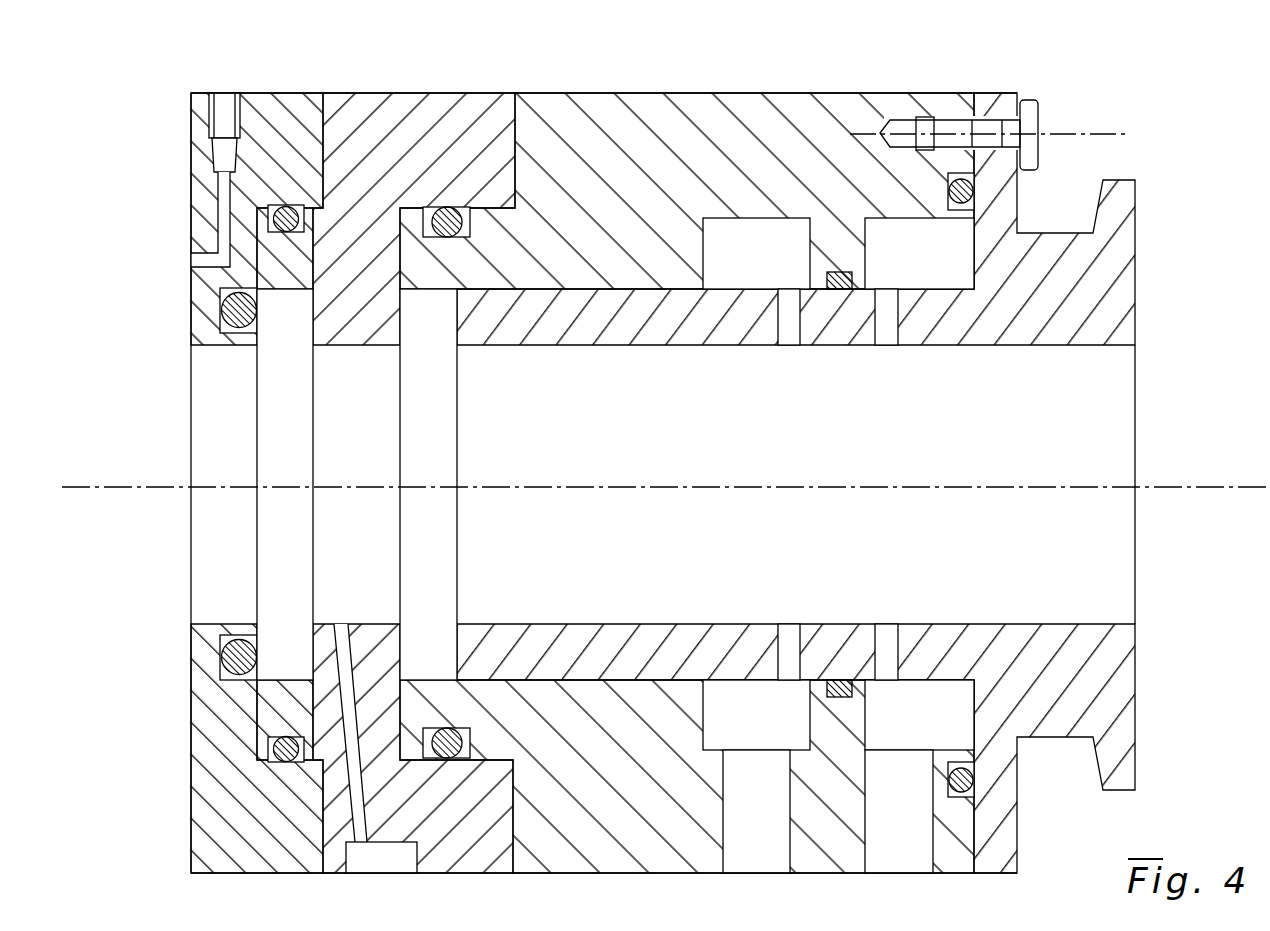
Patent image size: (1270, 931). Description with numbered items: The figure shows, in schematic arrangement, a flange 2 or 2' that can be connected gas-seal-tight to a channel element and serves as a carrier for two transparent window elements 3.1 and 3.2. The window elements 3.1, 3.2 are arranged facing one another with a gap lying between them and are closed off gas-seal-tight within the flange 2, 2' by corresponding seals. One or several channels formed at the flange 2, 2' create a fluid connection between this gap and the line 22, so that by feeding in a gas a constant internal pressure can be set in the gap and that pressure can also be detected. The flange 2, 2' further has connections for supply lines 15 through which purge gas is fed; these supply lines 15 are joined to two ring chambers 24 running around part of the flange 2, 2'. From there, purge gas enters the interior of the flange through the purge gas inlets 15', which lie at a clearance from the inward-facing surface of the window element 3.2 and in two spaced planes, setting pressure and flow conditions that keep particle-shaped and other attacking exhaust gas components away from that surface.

The flange 2 is at (1036, 103).
The flange 2' is at (1121, 103).
The transparent window element 3.1 is at (285, 484).
The transparent window element 3.2 is at (396, 484).
The supply line 15 is at (828, 840).
The purge gas inlet 15' is at (844, 484).
The line 22 is at (372, 882).
The ring chamber 24 is at (838, 484).